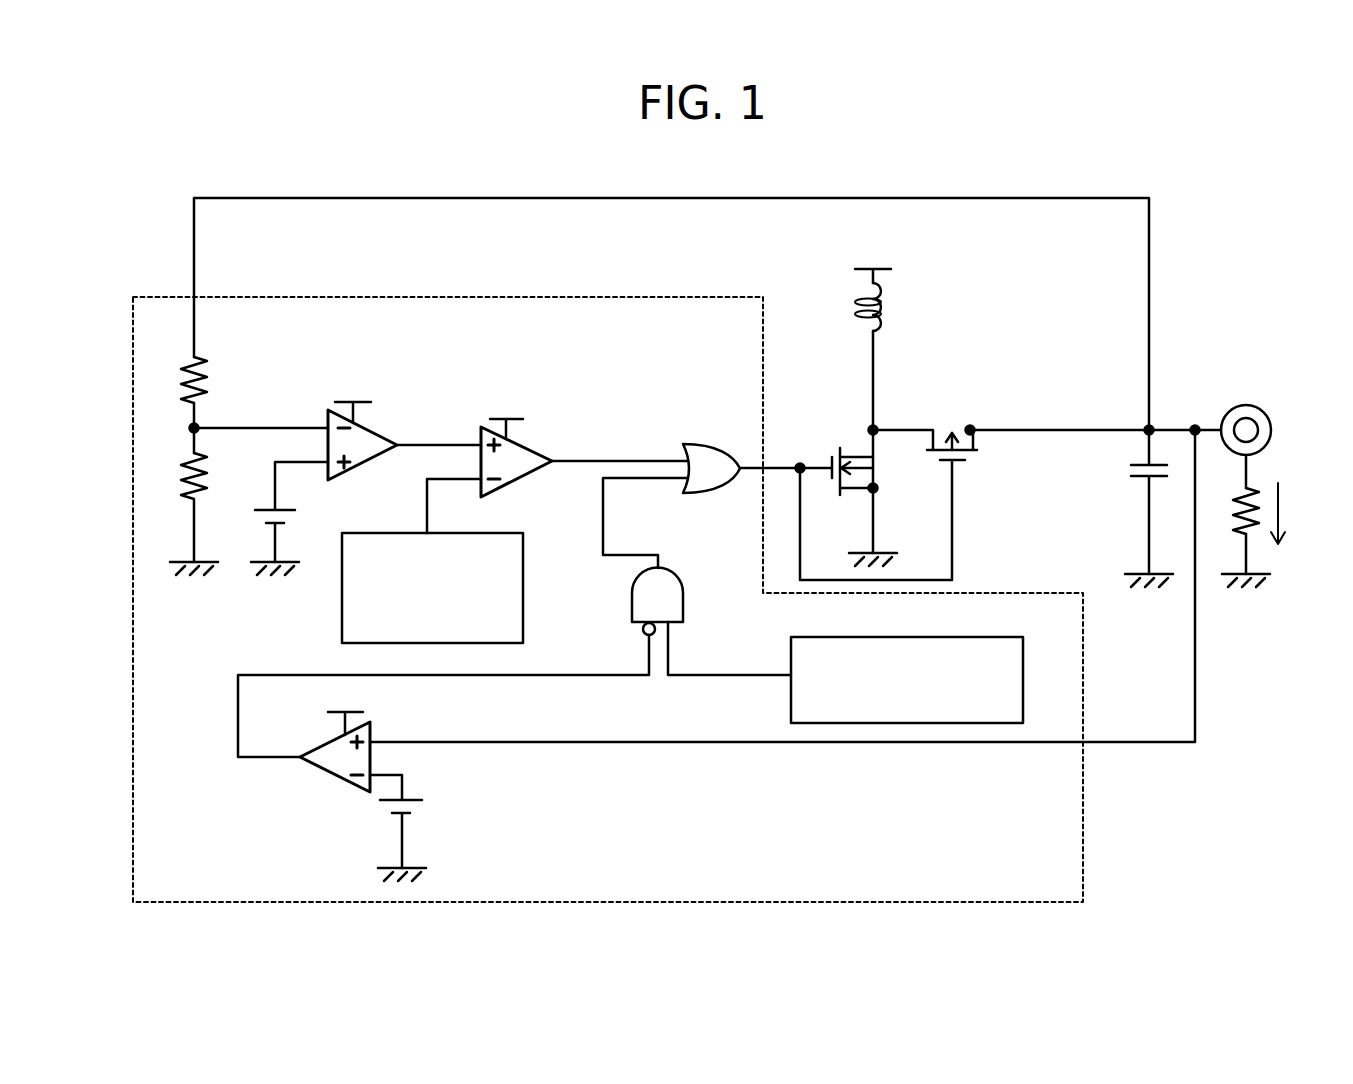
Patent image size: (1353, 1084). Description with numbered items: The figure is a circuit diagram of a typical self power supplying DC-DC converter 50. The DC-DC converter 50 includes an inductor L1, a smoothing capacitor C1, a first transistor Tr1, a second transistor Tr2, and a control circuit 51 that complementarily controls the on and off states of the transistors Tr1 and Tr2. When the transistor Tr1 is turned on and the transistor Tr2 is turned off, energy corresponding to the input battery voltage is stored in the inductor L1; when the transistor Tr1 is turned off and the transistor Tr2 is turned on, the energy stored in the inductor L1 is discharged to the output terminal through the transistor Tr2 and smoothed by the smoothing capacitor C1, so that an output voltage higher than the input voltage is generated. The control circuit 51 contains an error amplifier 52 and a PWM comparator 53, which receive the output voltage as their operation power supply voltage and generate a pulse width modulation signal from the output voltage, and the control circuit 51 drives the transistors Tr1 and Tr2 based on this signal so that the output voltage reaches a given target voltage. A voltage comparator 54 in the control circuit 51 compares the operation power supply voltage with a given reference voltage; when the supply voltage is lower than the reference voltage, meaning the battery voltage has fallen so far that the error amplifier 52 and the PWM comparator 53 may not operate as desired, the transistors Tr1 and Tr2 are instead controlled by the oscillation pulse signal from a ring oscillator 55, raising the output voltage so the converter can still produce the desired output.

The DC-DC converter 50 is at (1231, 175).
The control circuit 51 is at (423, 296).
The error amplifier 52 is at (375, 434).
The pulse width modulation (PWM) comparator 53 is at (533, 452).
The voltage comparator 54 is at (325, 770).
The ring oscillator 55 is at (1009, 637).
The inductor L1 is at (856, 301).
The smoothing capacitor C1 is at (1141, 465).
The first transistor Tr1 is at (879, 491).
The second transistor Tr2 is at (967, 464).